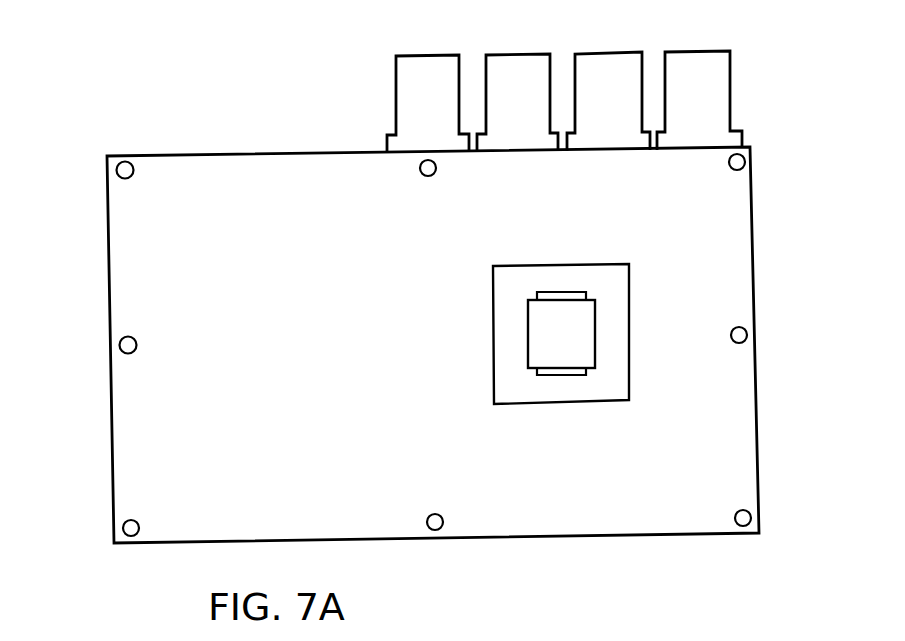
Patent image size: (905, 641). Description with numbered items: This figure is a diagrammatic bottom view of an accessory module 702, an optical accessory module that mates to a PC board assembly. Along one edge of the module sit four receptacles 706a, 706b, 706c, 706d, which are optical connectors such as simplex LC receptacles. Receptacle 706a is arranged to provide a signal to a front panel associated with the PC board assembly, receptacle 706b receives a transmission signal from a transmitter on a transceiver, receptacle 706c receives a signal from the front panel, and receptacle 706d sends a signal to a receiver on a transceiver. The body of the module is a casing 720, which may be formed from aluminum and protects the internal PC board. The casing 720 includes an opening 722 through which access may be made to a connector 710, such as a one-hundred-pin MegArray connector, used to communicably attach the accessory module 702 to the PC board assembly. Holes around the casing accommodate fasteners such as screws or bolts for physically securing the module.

The accessory module 702 is at (131, 94).
The receptacle 706a is at (418, 68).
The receptacle 706b is at (508, 67).
The receptacle 706c is at (602, 65).
The receptacle 706d is at (698, 63).
The connector 710 is at (595, 328).
The casing 720 is at (598, 512).
The opening 722 is at (541, 292).